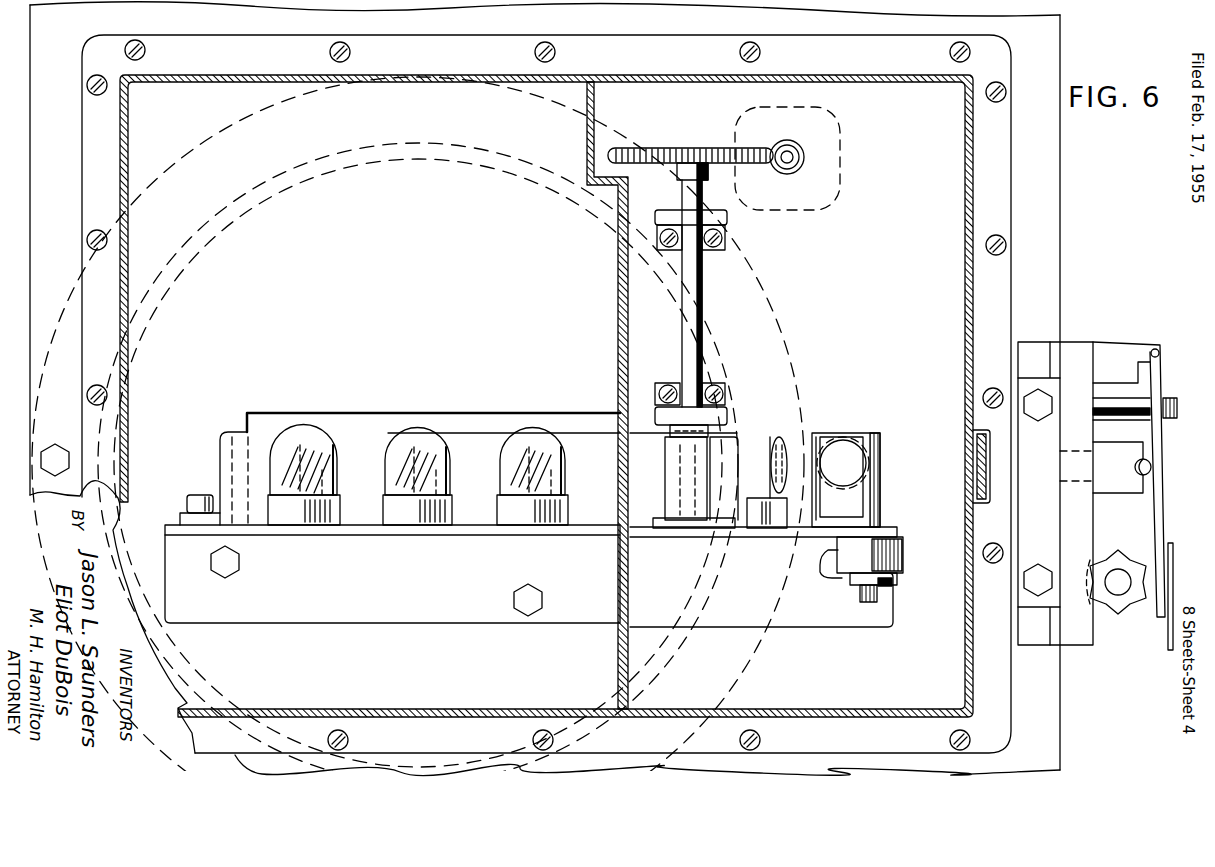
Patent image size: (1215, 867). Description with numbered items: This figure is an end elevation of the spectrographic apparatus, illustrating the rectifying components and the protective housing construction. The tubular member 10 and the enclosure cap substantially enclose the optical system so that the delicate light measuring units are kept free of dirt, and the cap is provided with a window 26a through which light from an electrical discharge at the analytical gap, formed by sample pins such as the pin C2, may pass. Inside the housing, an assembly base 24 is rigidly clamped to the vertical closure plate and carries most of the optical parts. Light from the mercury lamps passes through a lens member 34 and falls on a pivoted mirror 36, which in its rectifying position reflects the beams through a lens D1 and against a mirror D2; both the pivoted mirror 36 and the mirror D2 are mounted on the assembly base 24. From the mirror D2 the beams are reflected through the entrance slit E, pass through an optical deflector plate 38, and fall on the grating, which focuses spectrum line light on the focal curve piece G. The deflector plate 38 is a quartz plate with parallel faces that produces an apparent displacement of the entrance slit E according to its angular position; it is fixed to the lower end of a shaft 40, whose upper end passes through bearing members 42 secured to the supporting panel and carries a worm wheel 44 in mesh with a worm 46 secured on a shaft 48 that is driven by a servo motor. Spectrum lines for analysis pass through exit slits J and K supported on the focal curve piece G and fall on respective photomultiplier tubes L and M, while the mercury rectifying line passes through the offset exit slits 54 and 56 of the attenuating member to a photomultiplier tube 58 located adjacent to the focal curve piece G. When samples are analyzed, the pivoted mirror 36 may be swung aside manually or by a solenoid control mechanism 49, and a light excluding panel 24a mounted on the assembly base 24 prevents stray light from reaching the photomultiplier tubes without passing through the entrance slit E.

The tubular member 10 is at (757, 320).
The assembly base 24 is at (437, 535).
The light excluding panel 24a is at (618, 281).
The window 26a is at (982, 470).
The lens member 34 is at (843, 437).
The pivoted mirror 36 is at (833, 507).
The optical deflector plate 38 is at (720, 436).
The shaft 40 is at (683, 357).
The bearing members 42 is at (718, 216).
The worm wheel 44 is at (650, 150).
The worm 46 is at (805, 157).
The shaft 48 is at (803, 152).
The solenoid control mechanism 49 is at (855, 560).
The exit slit 54 is at (318, 457).
The exit slit 56 is at (325, 491).
The photomultiplier tube 58 is at (280, 440).
The focal curve piece G is at (362, 437).
The photomultiplier tube L is at (402, 433).
The photomultiplier tube M is at (515, 433).
The exit slit J is at (437, 463).
The exit slit K is at (547, 463).
The entrance slit E is at (687, 473).
The lens D1 is at (769, 456).
The mirror D2 is at (715, 492).
The pin C2 is at (1151, 467).